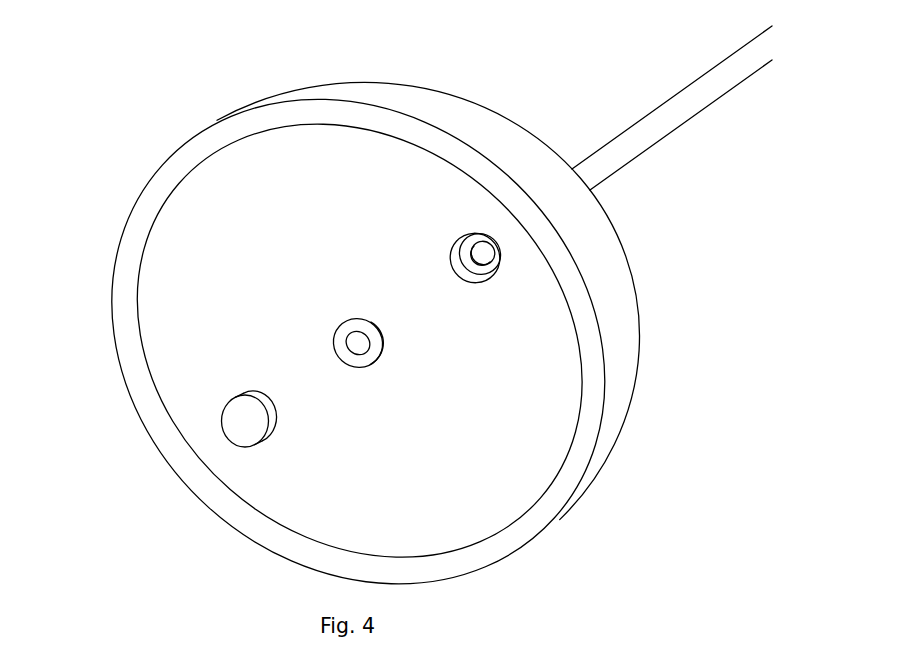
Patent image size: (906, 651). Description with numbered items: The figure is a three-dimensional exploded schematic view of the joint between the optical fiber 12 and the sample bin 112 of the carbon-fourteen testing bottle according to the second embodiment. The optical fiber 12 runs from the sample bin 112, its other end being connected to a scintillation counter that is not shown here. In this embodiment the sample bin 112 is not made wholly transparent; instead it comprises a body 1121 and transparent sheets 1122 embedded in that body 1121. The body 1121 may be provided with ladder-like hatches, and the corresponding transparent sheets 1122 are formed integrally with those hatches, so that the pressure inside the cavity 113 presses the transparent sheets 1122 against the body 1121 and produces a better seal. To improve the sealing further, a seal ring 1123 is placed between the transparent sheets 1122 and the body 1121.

The optical fiber 12 is at (643, 140).
The sample bin 112 is at (557, 502).
The cavity 113 is at (550, 402).
The body 1121 is at (173, 175).
The transparent sheets 1122 is at (252, 428).
The seal ring 1123 is at (375, 344).